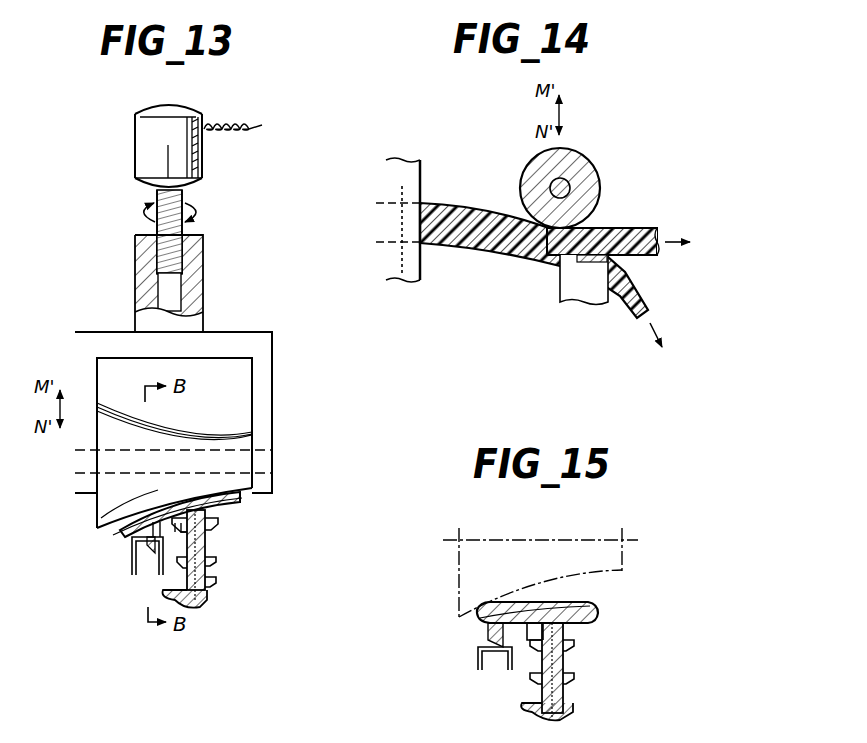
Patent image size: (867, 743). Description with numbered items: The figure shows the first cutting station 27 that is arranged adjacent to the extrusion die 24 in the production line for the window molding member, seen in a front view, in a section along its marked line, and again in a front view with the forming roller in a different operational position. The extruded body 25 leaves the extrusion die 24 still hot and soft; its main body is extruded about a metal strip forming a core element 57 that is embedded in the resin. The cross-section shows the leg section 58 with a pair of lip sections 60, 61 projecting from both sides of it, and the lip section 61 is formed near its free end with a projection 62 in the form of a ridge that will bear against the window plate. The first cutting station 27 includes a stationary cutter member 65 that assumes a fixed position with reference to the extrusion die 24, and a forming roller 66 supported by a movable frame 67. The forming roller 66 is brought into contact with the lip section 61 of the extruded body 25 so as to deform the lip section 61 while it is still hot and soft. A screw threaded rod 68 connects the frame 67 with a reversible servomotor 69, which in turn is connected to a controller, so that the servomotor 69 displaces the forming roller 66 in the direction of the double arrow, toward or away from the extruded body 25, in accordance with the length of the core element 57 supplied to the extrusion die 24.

In FIG. 14, the extrusion die 24 is at (423, 178).
In FIG. 14, the extruded body 25 is at (449, 232).
In FIG. 13, the first cutting station 27 is at (236, 305).
In FIG. 13, the core element 57 is at (207, 577).
In FIG. 15, the core element 57 is at (568, 691).
In FIG. 13, the leg section 58 is at (207, 536).
In FIG. 15, the leg section 58 is at (568, 660).
In FIG. 13, the lip section 60 is at (240, 492).
In FIG. 15, the lip section 60 is at (599, 614).
In FIG. 13, the lip section 61 is at (120, 531).
In FIG. 14, the lip section 61 is at (646, 228).
In FIG. 15, the lip section 61 is at (477, 617).
In FIG. 13, the projection 62 is at (152, 553).
In FIG. 14, the projection 62 is at (632, 314).
In FIG. 15, the projection 62 is at (487, 633).
In FIG. 13, the stationary cutter member 65 is at (132, 565).
In FIG. 14, the stationary cutter member 65 is at (610, 262).
In FIG. 15, the stationary cutter member 65 is at (478, 666).
In FIG. 13, the forming roller 66 is at (97, 512).
In FIG. 14, the forming roller 66 is at (590, 188).
In FIG. 15, the forming roller 66 is at (622, 558).
In FIG. 13, the movable frame 67 is at (272, 386).
In FIG. 13, the screw threaded rod 68 is at (188, 222).
In FIG. 13, the reversible servomotor 69 is at (205, 124).